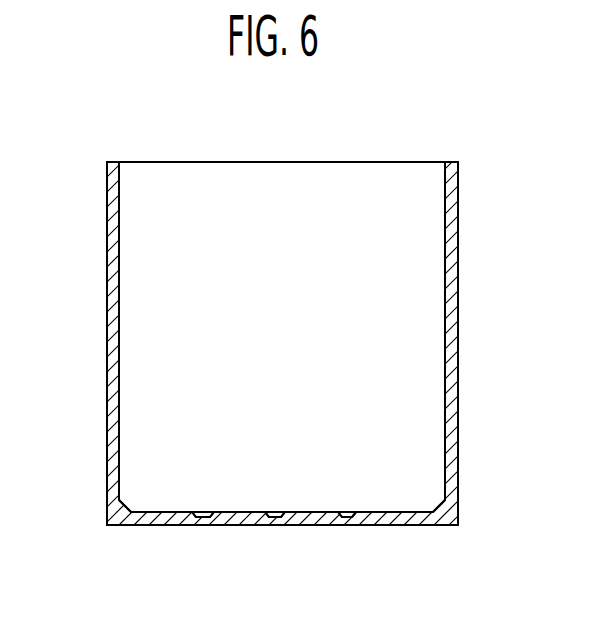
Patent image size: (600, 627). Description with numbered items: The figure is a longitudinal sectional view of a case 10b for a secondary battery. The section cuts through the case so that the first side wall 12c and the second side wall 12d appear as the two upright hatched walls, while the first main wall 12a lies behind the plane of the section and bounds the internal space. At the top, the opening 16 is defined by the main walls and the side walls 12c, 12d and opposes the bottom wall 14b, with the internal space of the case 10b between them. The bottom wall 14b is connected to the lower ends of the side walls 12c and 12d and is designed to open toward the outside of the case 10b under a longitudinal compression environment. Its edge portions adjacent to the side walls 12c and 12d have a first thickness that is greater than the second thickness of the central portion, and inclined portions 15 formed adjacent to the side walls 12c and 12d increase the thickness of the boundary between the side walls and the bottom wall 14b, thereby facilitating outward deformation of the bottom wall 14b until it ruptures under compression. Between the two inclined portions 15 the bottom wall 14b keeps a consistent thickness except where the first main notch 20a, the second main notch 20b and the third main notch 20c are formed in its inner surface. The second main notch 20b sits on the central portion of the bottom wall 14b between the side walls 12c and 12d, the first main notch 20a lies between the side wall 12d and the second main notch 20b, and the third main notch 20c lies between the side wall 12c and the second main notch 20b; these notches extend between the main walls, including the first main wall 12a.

The case for secondary battery 10b is at (100, 132).
The first main wall 12a is at (225, 180).
The first side wall 12c is at (455, 332).
The second side wall 12d is at (111, 340).
The bottom wall 14b is at (398, 527).
The inclined portions 15 is at (116, 527).
The opening 16 is at (317, 162).
The first main notch 20a is at (191, 527).
The second main notch 20b is at (265, 527).
The third main notch 20c is at (333, 527).